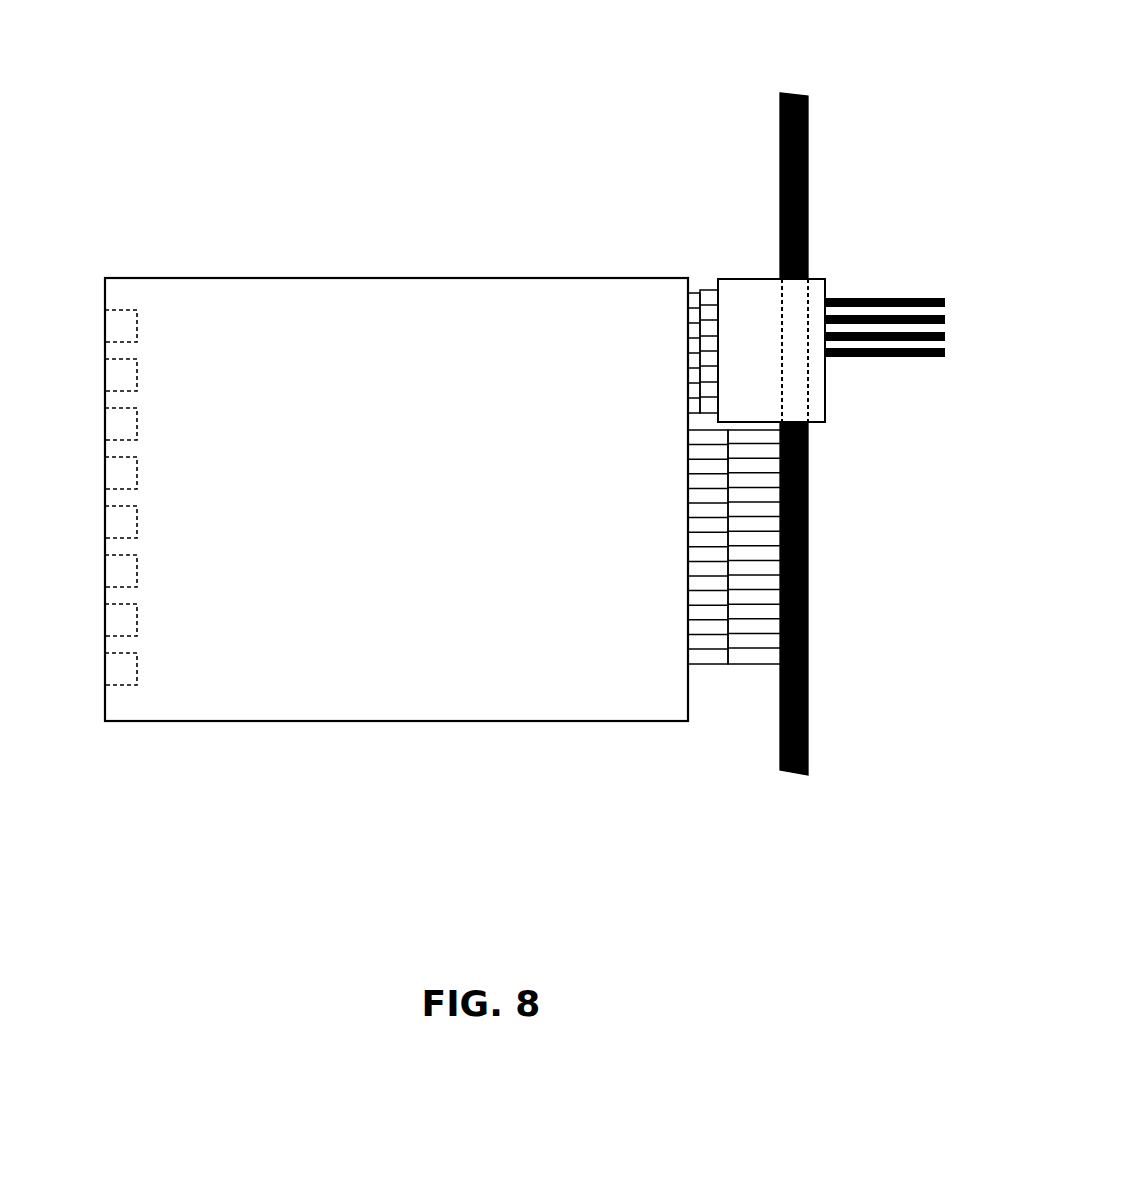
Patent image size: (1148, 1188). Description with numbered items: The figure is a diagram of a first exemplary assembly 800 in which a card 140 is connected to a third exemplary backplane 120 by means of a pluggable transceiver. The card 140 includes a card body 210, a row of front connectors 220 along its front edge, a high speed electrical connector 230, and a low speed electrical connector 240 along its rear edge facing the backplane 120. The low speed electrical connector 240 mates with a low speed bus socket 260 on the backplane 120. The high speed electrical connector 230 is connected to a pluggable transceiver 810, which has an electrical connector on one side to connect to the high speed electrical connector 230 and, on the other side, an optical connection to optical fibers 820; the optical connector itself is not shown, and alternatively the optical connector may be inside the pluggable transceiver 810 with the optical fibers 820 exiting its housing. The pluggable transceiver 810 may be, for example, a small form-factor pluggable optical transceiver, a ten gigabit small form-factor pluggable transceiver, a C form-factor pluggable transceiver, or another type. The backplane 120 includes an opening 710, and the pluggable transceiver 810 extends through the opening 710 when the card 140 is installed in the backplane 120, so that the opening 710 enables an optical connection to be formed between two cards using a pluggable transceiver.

The assembly 800 is at (160, 82).
The backplane 120 is at (808, 150).
The card 140 is at (409, 512).
The card body 210 is at (378, 277).
The front connectors 220 is at (123, 360).
The high speed electrical connector 230 is at (688, 340).
The low speed electrical connector 240 is at (614, 547).
The low speed bus socket 260 is at (765, 665).
The opening 710 is at (806, 325).
The pluggable transceiver 810 is at (747, 278).
The optical fibers 820 is at (890, 359).